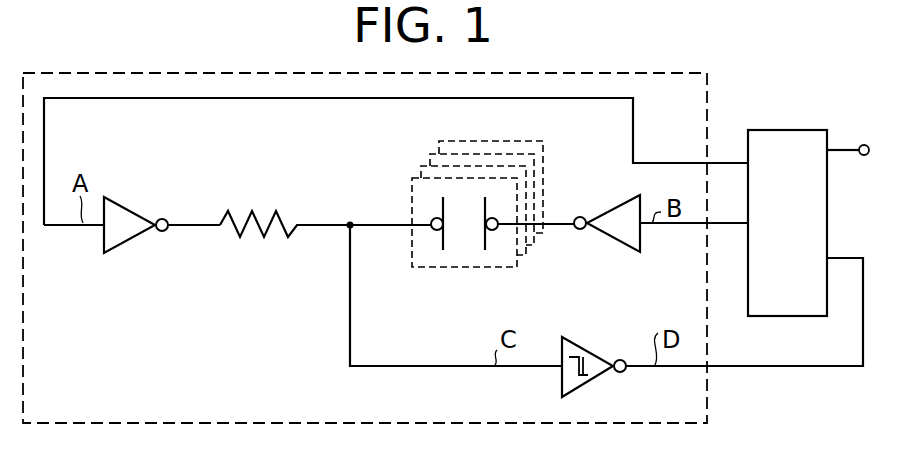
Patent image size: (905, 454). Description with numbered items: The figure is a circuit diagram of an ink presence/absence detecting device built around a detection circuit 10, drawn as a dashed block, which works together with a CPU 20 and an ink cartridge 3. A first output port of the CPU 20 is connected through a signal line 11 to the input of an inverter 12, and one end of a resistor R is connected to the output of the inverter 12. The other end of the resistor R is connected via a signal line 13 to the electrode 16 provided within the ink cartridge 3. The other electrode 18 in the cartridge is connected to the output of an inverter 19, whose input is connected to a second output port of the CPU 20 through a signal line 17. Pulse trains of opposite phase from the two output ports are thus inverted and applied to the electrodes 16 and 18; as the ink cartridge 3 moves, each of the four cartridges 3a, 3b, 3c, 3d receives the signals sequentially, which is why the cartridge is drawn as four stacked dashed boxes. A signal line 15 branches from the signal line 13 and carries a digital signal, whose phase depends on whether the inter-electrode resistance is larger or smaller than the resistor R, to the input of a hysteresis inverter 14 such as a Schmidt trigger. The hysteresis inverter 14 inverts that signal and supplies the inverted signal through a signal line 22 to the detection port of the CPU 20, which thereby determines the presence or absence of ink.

The detection circuit 10 is at (258, 73).
The signal line 11 is at (193, 98).
The inverter 12 is at (134, 209).
The resistor R is at (255, 213).
The signal line 13 is at (315, 228).
The hysteresis inverter 14 is at (596, 346).
The signal line 15 is at (350, 298).
The electrode 16 is at (443, 242).
The signal line 17 is at (675, 227).
The electrode 18 is at (485, 242).
The inverter 19 is at (605, 207).
The CPU 20 is at (782, 130).
The signal line 22 is at (773, 369).
The ink cartridge 3 is at (435, 188).
The cartridge 3a is at (411, 197).
The cartridge 3b is at (421, 167).
The cartridge 3c is at (430, 155).
The cartridge 3d is at (446, 141).